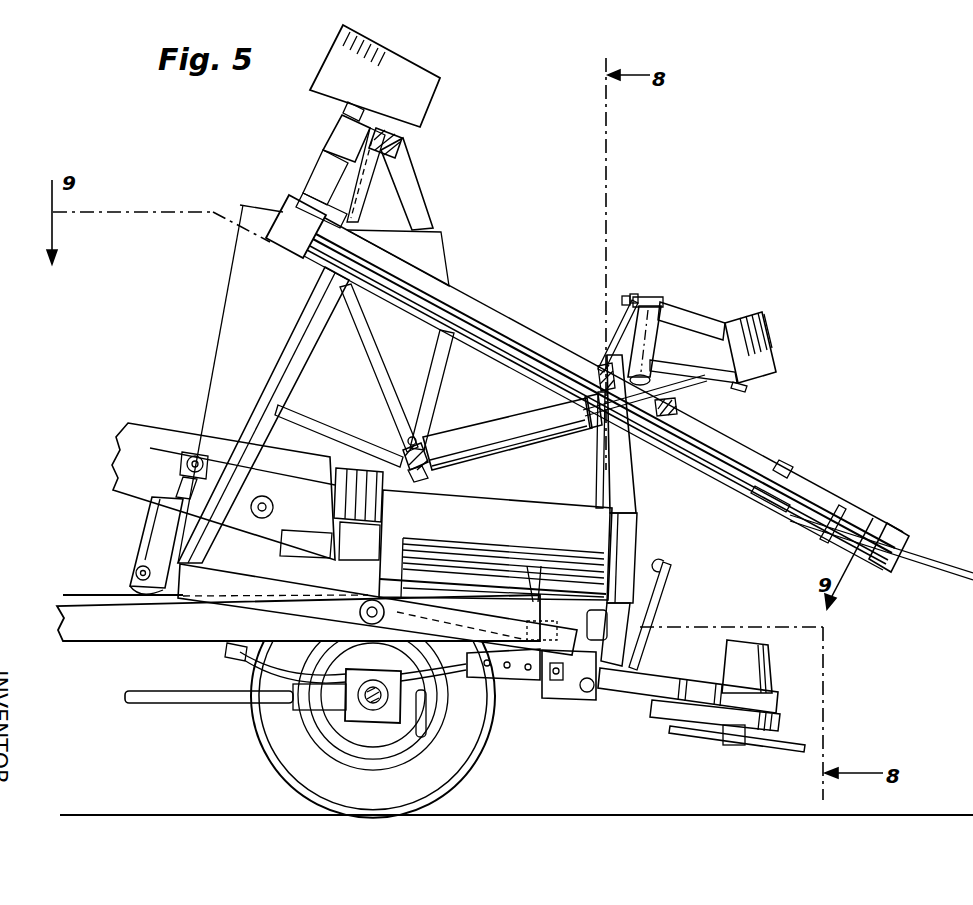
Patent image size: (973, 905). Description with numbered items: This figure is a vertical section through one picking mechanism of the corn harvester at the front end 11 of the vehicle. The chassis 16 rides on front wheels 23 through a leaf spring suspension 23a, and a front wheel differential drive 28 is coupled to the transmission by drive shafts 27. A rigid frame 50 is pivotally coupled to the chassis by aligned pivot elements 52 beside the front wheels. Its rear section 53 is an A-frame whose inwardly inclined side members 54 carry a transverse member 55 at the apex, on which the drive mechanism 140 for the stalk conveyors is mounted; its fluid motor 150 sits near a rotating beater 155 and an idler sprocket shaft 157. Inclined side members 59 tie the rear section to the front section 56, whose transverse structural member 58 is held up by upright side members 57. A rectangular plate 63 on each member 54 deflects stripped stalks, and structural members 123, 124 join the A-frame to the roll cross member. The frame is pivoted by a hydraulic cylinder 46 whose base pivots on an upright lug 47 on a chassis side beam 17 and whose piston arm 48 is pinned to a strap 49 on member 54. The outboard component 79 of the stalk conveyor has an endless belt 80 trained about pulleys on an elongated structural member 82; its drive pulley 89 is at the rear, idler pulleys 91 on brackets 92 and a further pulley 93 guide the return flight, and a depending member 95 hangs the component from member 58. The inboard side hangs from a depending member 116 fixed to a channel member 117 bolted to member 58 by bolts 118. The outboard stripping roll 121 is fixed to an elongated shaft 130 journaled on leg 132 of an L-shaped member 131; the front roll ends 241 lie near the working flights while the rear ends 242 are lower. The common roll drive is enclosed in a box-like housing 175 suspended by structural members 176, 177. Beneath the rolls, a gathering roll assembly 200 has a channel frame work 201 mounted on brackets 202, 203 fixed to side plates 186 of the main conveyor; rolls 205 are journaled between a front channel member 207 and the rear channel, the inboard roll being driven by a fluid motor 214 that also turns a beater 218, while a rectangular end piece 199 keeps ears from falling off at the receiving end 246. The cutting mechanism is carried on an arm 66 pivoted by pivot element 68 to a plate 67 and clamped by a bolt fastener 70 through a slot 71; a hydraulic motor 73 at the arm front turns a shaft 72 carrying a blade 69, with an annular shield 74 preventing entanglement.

The drive mechanism 140 is at (330, 60).
The fluid motor 150 is at (340, 126).
The rotating beater 155 is at (312, 165).
The shaft 157 is at (302, 190).
The transverse member 55 is at (405, 136).
The inclined side members 59 is at (412, 176).
The drive pulley 89 is at (290, 236).
The outboard component 79 is at (517, 325).
The elongated structural member 82 is at (545, 345).
The endless belt 80 is at (505, 357).
The brackets 92 is at (442, 283).
The pulley 93 is at (887, 565).
The rectangular plate 63 is at (222, 318).
The inclined side members 54 is at (310, 298).
The rear section 53 is at (273, 367).
The structural member 124 is at (357, 341).
The idler pulleys 91 is at (413, 330).
The structural member 123 is at (297, 407).
The rear ends of rolls 242 is at (407, 436).
The leg 132 is at (420, 472).
The L-shape member 131 is at (413, 478).
The outboard roll 121 is at (430, 438).
The adjacent ends of rolls 241 is at (580, 402).
The elongated shaft 130 is at (690, 387).
The depending member 95 is at (605, 368).
The depending member 116 is at (604, 335).
The upright side members 57 is at (652, 347).
The transverse structural member 58 is at (660, 297).
The channel member 117 is at (638, 294).
The bolts 118 is at (626, 296).
The structural member 176 is at (690, 316).
The box like housing 175 is at (762, 312).
The structural member 177 is at (747, 390).
The gathering roll assemblies 200 is at (627, 498).
The front section 56 is at (606, 470).
The side plates 186 is at (136, 432).
The strap 49 is at (212, 456).
The piston arm 48 is at (180, 488).
The hydraulic cylinder 46 is at (150, 540).
The upright lug 47 is at (130, 581).
The beater 218 is at (335, 470).
The fluid motor 214 is at (298, 524).
The channel type frame work 201 is at (552, 492).
The front channel member 207 is at (639, 542).
The bracket 202 is at (629, 585).
The rectangular end piece 199 is at (668, 576).
The receiving end 246 is at (668, 563).
The rolls 205 is at (540, 582).
The chassis 16 is at (86, 645).
The side beam 17 is at (141, 645).
The rigid frame 50 is at (194, 603).
The pivot elements 52 is at (325, 623).
The bracket 203 is at (358, 610).
The front wheel differential drive 28 is at (388, 672).
The drive shafts 27 is at (156, 703).
The front side wheels 23 is at (270, 765).
The leaf spring suspension 23a is at (250, 666).
The front end 11 is at (476, 672).
The slot 71 is at (554, 702).
The plate 67 is at (569, 700).
The bolt type fastener 70 is at (549, 683).
The pivot element 68 is at (592, 692).
The arm 66 is at (663, 679).
The annular shield 74 is at (654, 716).
The hydraulic motor 73 is at (752, 642).
The shaft 72 is at (732, 745).
The blade 69 is at (765, 750).